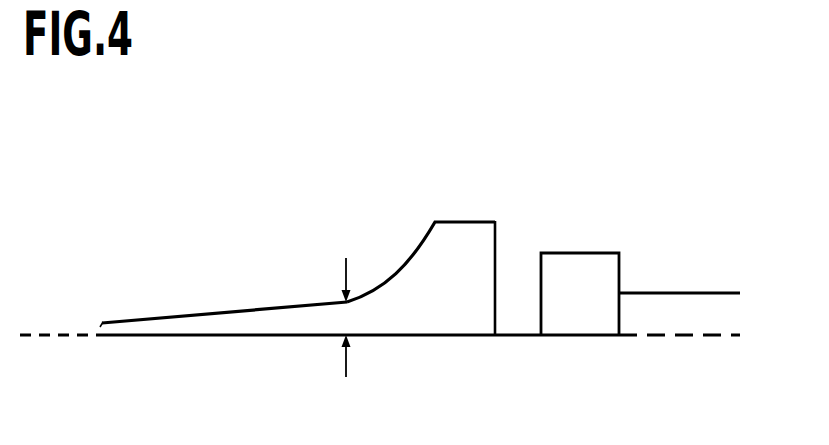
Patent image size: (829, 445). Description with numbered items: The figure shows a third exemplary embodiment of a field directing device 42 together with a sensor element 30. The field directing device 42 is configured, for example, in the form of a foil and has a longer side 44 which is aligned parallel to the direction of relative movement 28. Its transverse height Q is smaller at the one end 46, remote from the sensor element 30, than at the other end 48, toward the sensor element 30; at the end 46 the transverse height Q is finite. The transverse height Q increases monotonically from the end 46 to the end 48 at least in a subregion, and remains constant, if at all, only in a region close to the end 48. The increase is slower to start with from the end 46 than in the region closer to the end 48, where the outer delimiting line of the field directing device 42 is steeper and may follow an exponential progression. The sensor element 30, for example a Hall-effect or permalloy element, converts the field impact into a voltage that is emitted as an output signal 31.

The direction of relative movement 28 is at (685, 338).
The sensor element 30 is at (580, 283).
The output signal 31 is at (688, 293).
The field directing device 42 is at (425, 272).
The longer side 44 is at (422, 338).
The one end 46 is at (100, 326).
The other end 48 is at (495, 243).
The transverse height Q is at (343, 313).